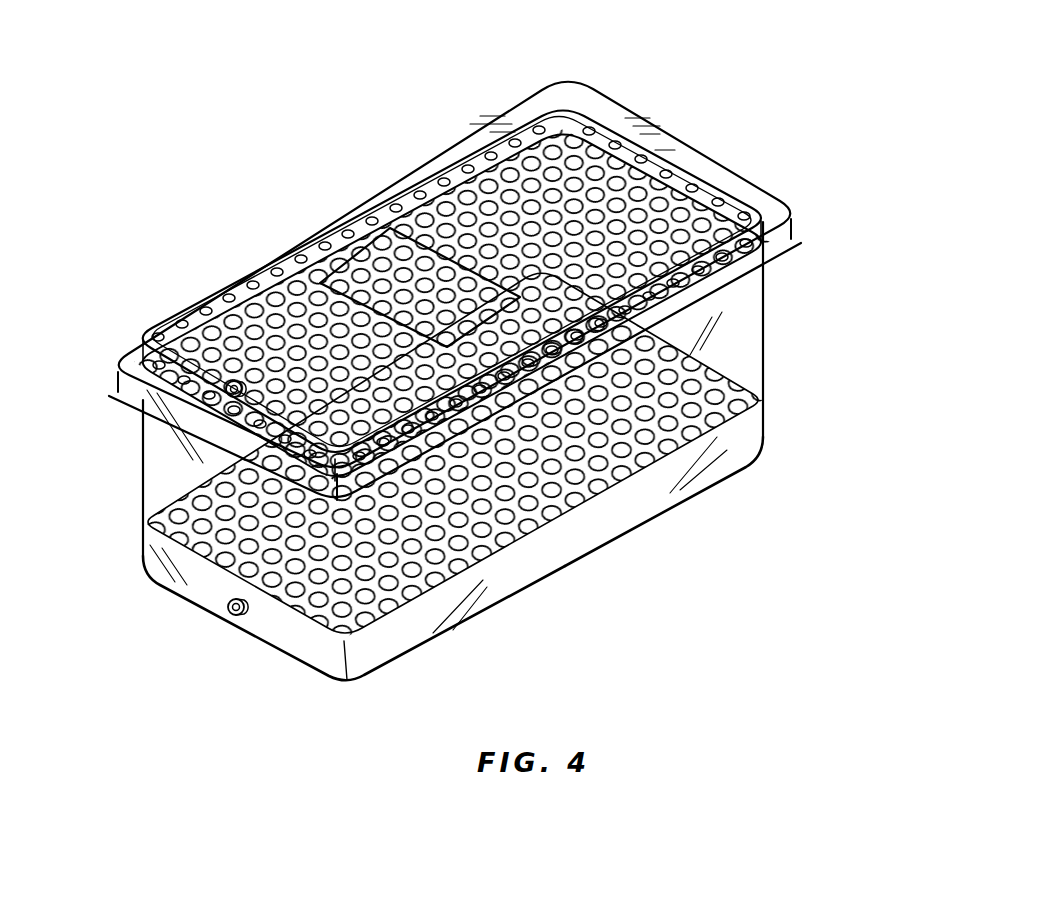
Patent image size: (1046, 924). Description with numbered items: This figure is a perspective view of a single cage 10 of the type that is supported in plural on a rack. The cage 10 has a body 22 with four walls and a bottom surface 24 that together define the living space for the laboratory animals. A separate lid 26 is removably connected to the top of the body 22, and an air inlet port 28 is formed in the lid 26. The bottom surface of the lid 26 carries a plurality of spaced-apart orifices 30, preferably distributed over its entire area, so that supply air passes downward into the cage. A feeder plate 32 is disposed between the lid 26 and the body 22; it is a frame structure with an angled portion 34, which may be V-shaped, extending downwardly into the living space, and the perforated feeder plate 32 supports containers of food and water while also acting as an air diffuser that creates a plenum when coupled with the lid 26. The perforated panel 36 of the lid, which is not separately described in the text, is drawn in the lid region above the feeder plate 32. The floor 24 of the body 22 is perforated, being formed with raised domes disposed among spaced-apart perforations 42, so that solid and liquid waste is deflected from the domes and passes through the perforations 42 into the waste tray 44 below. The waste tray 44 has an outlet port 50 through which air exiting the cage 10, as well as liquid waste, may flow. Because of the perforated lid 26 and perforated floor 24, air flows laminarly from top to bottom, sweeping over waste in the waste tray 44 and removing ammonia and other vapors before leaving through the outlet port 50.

The cage 10 is at (812, 249).
The body 22 is at (765, 340).
The bottom surface 24 is at (583, 517).
The lid 26 is at (577, 81).
The air inlet port 28 is at (147, 425).
The orifices 30 is at (183, 340).
The feeder plate 32 is at (647, 167).
The angled portion 34 is at (487, 525).
The perforated lid panel 36 is at (450, 205).
The perforations 42 is at (680, 430).
The waste tray 44 is at (762, 455).
The outlet port 50 is at (226, 614).